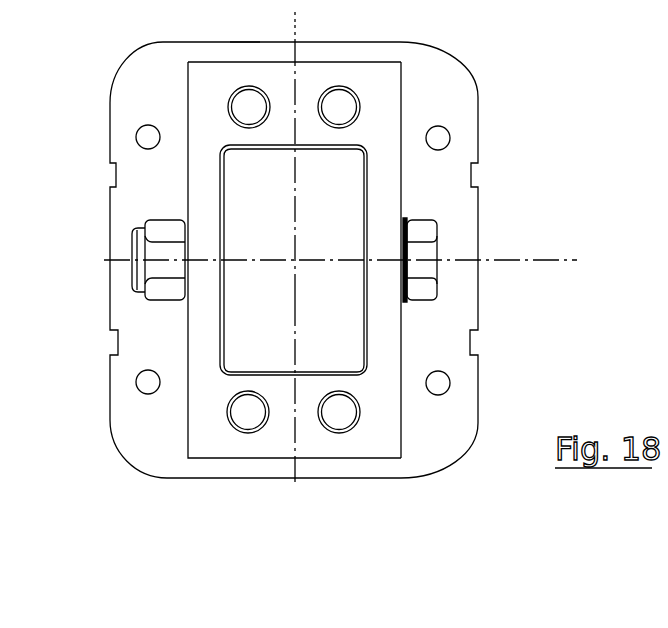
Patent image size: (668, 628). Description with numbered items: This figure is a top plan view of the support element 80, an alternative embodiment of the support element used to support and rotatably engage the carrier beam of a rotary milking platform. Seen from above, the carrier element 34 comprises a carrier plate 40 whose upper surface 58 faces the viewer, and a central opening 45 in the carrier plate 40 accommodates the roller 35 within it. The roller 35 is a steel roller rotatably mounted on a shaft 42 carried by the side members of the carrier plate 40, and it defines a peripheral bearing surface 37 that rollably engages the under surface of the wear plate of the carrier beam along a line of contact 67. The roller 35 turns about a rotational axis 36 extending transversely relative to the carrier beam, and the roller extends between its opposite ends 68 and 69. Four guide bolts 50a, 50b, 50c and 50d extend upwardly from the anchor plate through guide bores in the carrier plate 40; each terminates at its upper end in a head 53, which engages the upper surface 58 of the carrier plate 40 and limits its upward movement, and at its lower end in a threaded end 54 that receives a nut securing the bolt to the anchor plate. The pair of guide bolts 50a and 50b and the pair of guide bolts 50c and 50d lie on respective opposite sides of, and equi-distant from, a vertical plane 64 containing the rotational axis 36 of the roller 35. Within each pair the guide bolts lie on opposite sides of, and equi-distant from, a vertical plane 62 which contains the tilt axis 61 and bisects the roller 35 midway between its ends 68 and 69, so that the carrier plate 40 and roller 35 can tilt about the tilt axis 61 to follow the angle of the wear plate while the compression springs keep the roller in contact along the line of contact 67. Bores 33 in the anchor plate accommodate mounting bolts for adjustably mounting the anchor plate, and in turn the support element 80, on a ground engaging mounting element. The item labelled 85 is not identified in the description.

The support element 80 is at (543, 144).
The carrier element 34 is at (388, 82).
The central opening 45 is at (222, 185).
The carrier plate 40 is at (203, 73).
The upper surface 58 is at (390, 110).
The peripheral bearing surface 37 is at (347, 180).
The end of roller 69 is at (367, 323).
The roller 35 is at (350, 352).
The end of roller 68 is at (220, 332).
The shaft 42 is at (133, 253).
The vertical plane 64 is at (512, 262).
The rotational axis 36 is at (558, 260).
The line of contact 67 is at (328, 260).
The tilt axis 61 is at (293, 486).
The vertical plane 62 is at (298, 488).
The threaded end 54 is at (296, 20).
The top edge 85 is at (355, 21).
The bores 33 is at (147, 137).
The head 53 is at (240, 107).
The guide bolt 50a is at (252, 102).
The guide bolt 50b is at (337, 102).
The guide bolt 50c is at (247, 427).
The guide bolt 50d is at (342, 417).